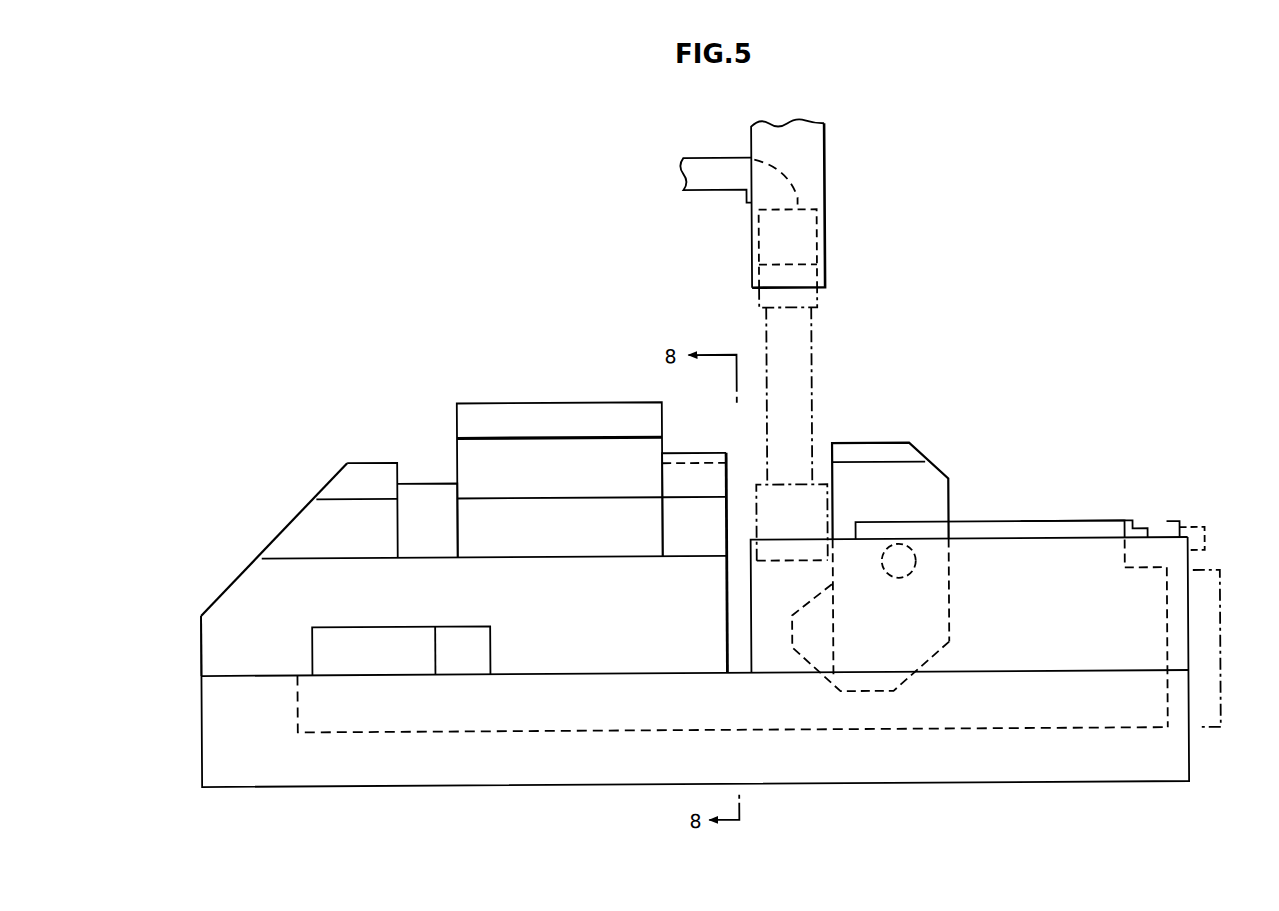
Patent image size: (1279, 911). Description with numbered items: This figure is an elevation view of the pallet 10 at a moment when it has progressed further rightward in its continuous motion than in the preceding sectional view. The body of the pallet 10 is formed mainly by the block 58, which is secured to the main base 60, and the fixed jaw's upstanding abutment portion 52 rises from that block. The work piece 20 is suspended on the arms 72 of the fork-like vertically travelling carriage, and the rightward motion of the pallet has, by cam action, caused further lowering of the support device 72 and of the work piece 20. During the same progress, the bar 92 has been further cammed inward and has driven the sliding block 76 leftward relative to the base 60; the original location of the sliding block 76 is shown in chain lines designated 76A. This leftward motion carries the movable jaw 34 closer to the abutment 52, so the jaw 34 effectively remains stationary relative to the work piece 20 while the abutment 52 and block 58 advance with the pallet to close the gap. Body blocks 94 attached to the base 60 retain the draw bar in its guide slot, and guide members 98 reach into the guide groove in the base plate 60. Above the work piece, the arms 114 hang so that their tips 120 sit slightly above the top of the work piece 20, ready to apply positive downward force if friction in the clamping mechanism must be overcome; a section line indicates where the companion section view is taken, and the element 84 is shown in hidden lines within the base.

The pallet 10 is at (242, 568).
The work piece 20 is at (813, 335).
The movable jaw 34 is at (833, 453).
The upstanding abutment portion 52 is at (570, 402).
The block 58 is at (578, 612).
The main base 60 is at (201, 757).
The arms 72 is at (827, 167).
The sliding block 76 is at (968, 523).
The original location of sliding block 76A is at (1202, 526).
The cam 84 is at (802, 665).
The bar 92 is at (383, 625).
The body blocks 94 is at (1021, 523).
The guide members 98 is at (689, 452).
The arms 114 is at (712, 158).
The tips 120 is at (752, 223).